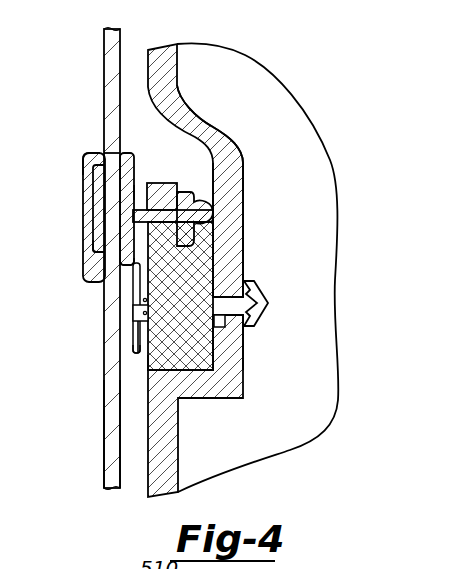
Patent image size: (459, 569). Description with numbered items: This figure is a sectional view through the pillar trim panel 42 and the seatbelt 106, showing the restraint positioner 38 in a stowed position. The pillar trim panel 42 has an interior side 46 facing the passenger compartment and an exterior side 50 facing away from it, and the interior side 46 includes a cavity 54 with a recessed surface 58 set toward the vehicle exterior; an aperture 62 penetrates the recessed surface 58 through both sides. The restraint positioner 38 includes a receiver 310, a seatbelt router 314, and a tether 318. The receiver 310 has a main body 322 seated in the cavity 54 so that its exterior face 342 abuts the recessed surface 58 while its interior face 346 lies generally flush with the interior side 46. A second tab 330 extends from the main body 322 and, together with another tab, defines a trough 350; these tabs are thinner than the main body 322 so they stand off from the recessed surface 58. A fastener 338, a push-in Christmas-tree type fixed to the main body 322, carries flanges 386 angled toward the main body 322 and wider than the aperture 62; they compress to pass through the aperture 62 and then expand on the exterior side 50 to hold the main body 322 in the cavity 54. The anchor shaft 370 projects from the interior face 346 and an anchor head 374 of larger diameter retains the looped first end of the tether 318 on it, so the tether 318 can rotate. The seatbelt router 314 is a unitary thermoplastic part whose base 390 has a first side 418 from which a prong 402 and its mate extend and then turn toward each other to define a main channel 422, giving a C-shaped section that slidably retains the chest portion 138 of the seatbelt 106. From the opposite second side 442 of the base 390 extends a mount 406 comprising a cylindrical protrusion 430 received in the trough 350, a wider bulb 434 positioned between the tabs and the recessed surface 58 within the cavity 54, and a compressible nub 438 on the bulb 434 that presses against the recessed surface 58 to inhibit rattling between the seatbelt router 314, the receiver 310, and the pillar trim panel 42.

The seatbelt 106 is at (97, 63).
The chest portion 138 is at (104, 418).
The restraint positioner 38 is at (66, 163).
The seatbelt router 314 is at (78, 153).
The first side 418 is at (112, 163).
The prong 402 is at (93, 233).
The main channel 422 is at (100, 250).
The second side 442 is at (137, 163).
The protrusion 430 is at (138, 197).
The base 390 is at (131, 265).
The second tab 330 is at (167, 183).
The nub 438 is at (208, 221).
The pillar trim panel 42 is at (161, 52).
The cavity 54 is at (210, 127).
The mount 406 is at (226, 127).
The recessed surface 58 is at (215, 168).
The bulb 434 is at (200, 265).
The exterior side 50 is at (243, 230).
The trough 350 is at (160, 232).
The exterior face 342 is at (148, 371).
The anchor head 374 is at (133, 311).
The anchor shaft 370 is at (148, 308).
The tether 318 is at (134, 362).
The interior side 46 is at (148, 450).
The interior face 346 is at (217, 358).
The aperture 62 is at (228, 318).
The receiver 310 is at (188, 366).
The main body 322 is at (208, 367).
The flanges 386 is at (269, 300).
The fastener 338 is at (268, 303).